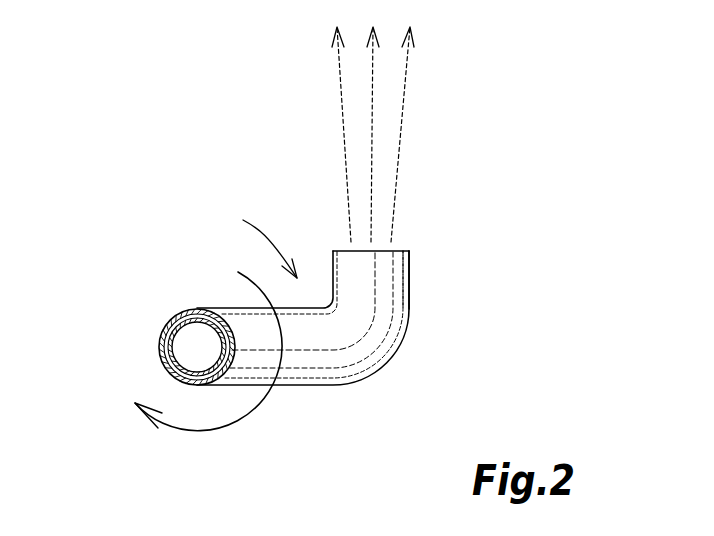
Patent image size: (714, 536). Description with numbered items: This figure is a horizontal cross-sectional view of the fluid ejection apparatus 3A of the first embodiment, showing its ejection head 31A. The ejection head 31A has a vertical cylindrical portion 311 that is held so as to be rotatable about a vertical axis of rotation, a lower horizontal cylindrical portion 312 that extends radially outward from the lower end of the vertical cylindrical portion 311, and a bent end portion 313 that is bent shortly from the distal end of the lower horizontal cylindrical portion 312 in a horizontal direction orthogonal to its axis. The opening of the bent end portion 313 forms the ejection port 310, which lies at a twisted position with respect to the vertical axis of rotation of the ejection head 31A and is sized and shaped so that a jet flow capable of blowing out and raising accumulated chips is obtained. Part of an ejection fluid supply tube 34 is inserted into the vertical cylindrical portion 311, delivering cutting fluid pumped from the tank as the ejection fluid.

The ejection head 31A is at (363, 373).
The ejection port 310 is at (397, 250).
The vertical cylindrical portion 311 is at (158, 332).
The lower horizontal cylindrical portion 312 is at (284, 384).
The bent end portion 313 is at (403, 284).
The ejection fluid supply tube 34 is at (190, 323).
The fluid ejection apparatus 3A is at (265, 215).